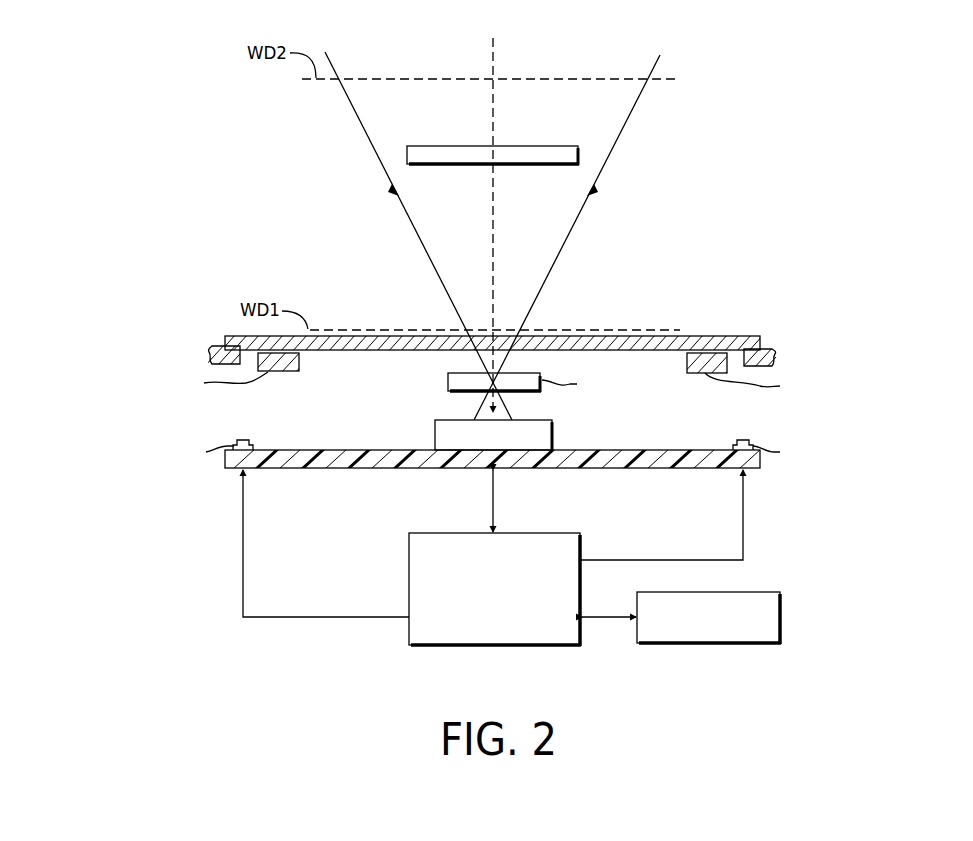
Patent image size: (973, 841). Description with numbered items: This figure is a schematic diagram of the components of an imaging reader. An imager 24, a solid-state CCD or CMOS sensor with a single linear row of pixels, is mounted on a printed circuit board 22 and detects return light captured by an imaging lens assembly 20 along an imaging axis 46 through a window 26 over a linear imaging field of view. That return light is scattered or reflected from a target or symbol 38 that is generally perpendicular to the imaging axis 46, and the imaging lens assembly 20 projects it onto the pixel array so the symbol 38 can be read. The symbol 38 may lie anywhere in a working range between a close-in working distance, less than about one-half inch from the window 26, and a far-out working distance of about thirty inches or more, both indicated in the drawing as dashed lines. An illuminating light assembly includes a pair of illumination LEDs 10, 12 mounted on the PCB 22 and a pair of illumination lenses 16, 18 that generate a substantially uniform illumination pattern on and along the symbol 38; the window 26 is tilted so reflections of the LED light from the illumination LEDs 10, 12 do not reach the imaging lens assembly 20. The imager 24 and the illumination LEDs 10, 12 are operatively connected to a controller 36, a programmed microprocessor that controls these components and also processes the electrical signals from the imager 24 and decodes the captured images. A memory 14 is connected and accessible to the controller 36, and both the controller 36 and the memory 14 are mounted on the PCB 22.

The illumination LED 10 is at (746, 439).
The illumination LED 12 is at (242, 439).
The memory 14 is at (781, 617).
The illumination lens 16 is at (686, 362).
The illumination lens 18 is at (290, 372).
The imaging lens assembly 20 is at (518, 392).
The printed circuit board 22 is at (560, 469).
The imager 24 is at (553, 432).
The window 26 is at (236, 337).
The controller 36 is at (428, 532).
The target or symbol 38 is at (546, 146).
The imaging axis 46 is at (494, 50).